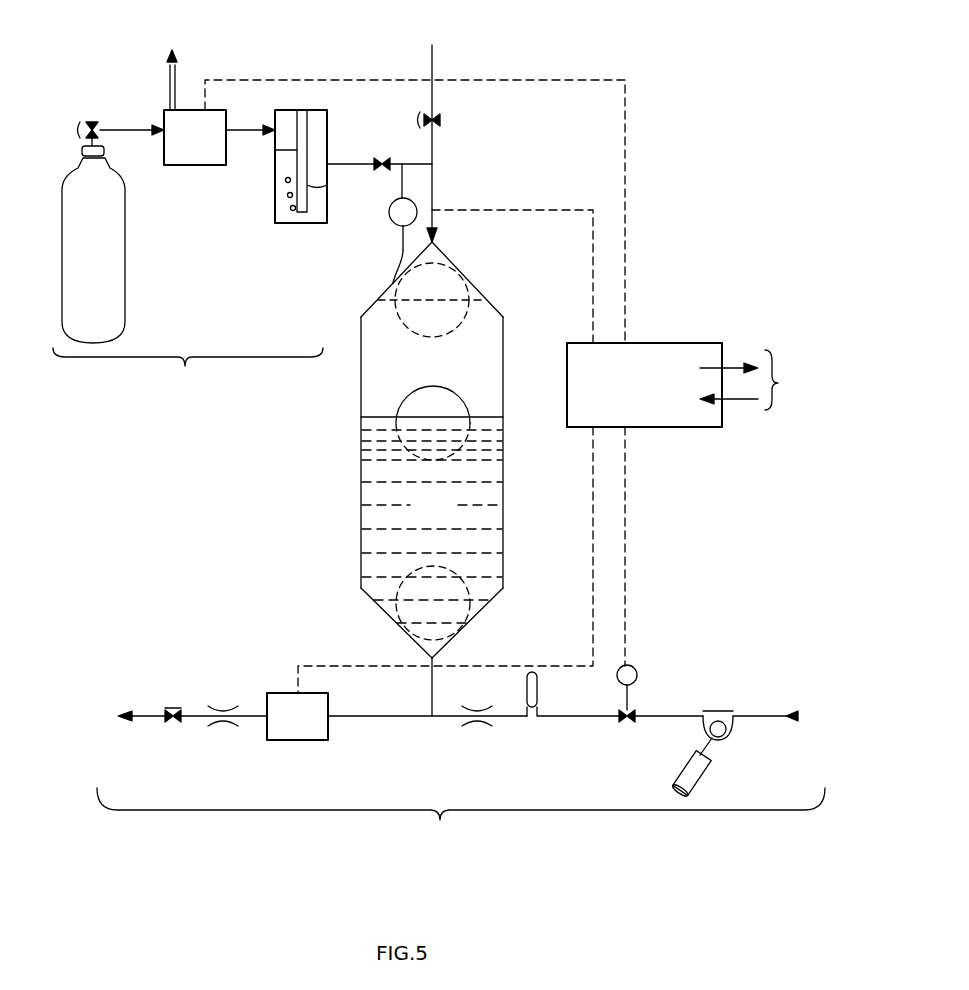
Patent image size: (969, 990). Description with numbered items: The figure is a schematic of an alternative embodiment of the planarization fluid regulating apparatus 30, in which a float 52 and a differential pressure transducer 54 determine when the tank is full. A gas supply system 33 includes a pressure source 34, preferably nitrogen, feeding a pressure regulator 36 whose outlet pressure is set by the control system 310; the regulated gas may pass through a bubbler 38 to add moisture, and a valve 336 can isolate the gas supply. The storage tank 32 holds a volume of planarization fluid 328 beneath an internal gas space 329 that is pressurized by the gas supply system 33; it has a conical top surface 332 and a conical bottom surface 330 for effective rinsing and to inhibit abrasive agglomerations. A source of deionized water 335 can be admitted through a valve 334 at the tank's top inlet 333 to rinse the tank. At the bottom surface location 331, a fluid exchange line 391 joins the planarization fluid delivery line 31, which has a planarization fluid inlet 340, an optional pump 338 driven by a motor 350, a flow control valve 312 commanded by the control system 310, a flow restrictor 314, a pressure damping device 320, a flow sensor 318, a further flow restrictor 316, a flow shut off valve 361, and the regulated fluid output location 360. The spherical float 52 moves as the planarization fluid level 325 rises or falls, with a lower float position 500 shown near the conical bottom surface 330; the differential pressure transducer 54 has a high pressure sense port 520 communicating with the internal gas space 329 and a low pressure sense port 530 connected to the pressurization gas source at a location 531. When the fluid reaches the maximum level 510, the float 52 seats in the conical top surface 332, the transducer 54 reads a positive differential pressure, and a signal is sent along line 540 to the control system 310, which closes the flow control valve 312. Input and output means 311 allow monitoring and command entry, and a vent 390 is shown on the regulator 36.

The planarization fluid regulating apparatus 30 is at (665, 41).
The planarization fluid delivery line 31 is at (461, 827).
The storage tank 32 is at (361, 346).
The gas supply system 33 is at (188, 369).
The pressure source 34 is at (113, 232).
The pressure regulator 36 is at (219, 137).
The bubbler 38 is at (275, 172).
The float 52 is at (447, 402).
The differential pressure transducer 54 is at (393, 226).
The control system 310 is at (644, 385).
The input and output means 311 is at (760, 380).
The flow control valve 312 is at (628, 694).
The flow restrictor 314 is at (468, 730).
The flow restrictor 316 is at (222, 727).
The flow sensor 318 is at (349, 716).
The pressure damping device 320 is at (538, 695).
The planarization fluid level 325 is at (377, 419).
The planarization fluid 328 is at (432, 526).
The internal gas space 329 is at (415, 361).
The conical bottom surface 330 is at (478, 615).
The bottom surface location 331 is at (441, 656).
The conical top surface 332 is at (458, 268).
The inlet 333 is at (446, 243).
The valve 334 is at (447, 121).
The source of deionized water 335 is at (432, 131).
The valve 336 is at (382, 158).
The pump 338 is at (713, 711).
The planarization fluid inlet 340 is at (810, 715).
The motor 350 is at (715, 767).
The regulated fluid output location 360 is at (120, 716).
The flow shut off valve 361 is at (175, 702).
The vent 390 is at (170, 70).
The fluid exchange line 391 is at (431, 690).
The lower sensing zone 500 is at (452, 602).
The maximum level 510 is at (470, 300).
The high pressure sense port 520 is at (399, 260).
The low pressure sense port 530 is at (401, 199).
The location 531 is at (402, 160).
The line 540 is at (493, 208).